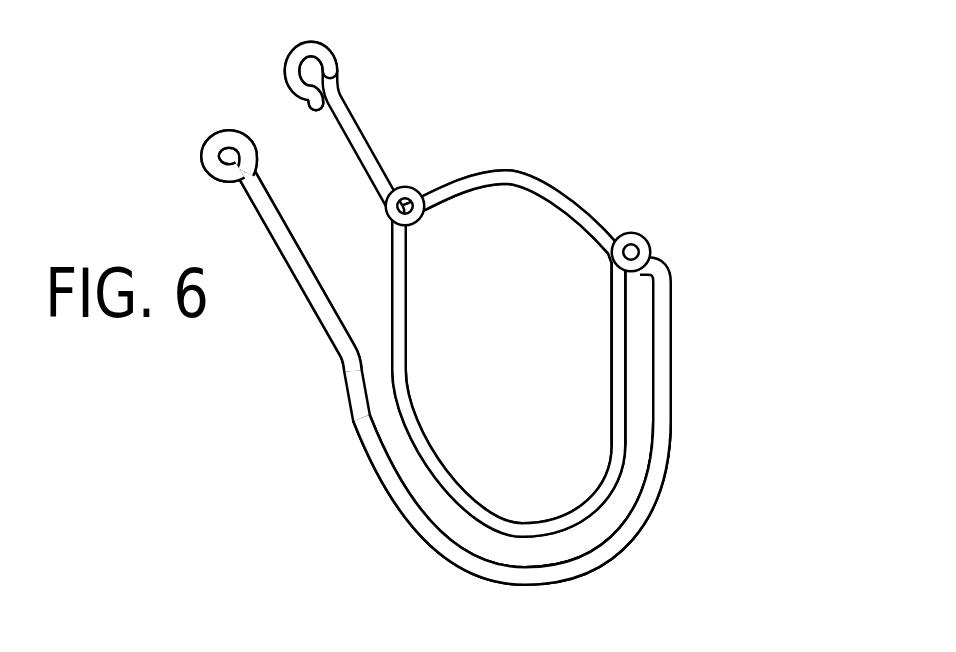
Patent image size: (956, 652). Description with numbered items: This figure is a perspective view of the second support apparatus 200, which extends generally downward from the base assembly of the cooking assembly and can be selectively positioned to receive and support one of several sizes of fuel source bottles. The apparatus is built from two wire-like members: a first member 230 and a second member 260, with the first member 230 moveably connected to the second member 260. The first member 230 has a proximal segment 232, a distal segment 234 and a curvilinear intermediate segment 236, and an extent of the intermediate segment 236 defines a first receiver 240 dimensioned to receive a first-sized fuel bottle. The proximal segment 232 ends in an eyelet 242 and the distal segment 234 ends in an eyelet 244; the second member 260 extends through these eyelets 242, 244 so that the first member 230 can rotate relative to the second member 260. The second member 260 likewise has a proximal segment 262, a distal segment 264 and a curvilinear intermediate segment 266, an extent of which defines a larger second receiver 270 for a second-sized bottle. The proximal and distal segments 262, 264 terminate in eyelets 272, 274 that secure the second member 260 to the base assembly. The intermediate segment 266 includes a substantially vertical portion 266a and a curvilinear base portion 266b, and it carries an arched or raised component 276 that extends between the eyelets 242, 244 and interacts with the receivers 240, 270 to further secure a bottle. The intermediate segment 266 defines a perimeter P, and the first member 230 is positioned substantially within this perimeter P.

The second support apparatus 200 is at (547, 323).
The first member 230 is at (602, 387).
The proximal segment 232 is at (402, 283).
The distal segment 234 is at (612, 333).
The intermediate segment 236 is at (552, 523).
The first receiver 240 is at (482, 453).
The eyelet 242 is at (402, 193).
The eyelet 244 is at (636, 240).
The second member 260 is at (442, 325).
The proximal segment 262 is at (317, 292).
The distal segment 264 is at (363, 157).
The intermediate segment 266 is at (617, 540).
The substantially vertical portion 266a is at (663, 420).
The curvilinear base portion 266b is at (548, 572).
The second receiver 270 is at (613, 497).
The eyelet 272 is at (228, 167).
The eyelet 274 is at (313, 72).
The arched component 276 is at (553, 190).
The perimeter P is at (443, 547).